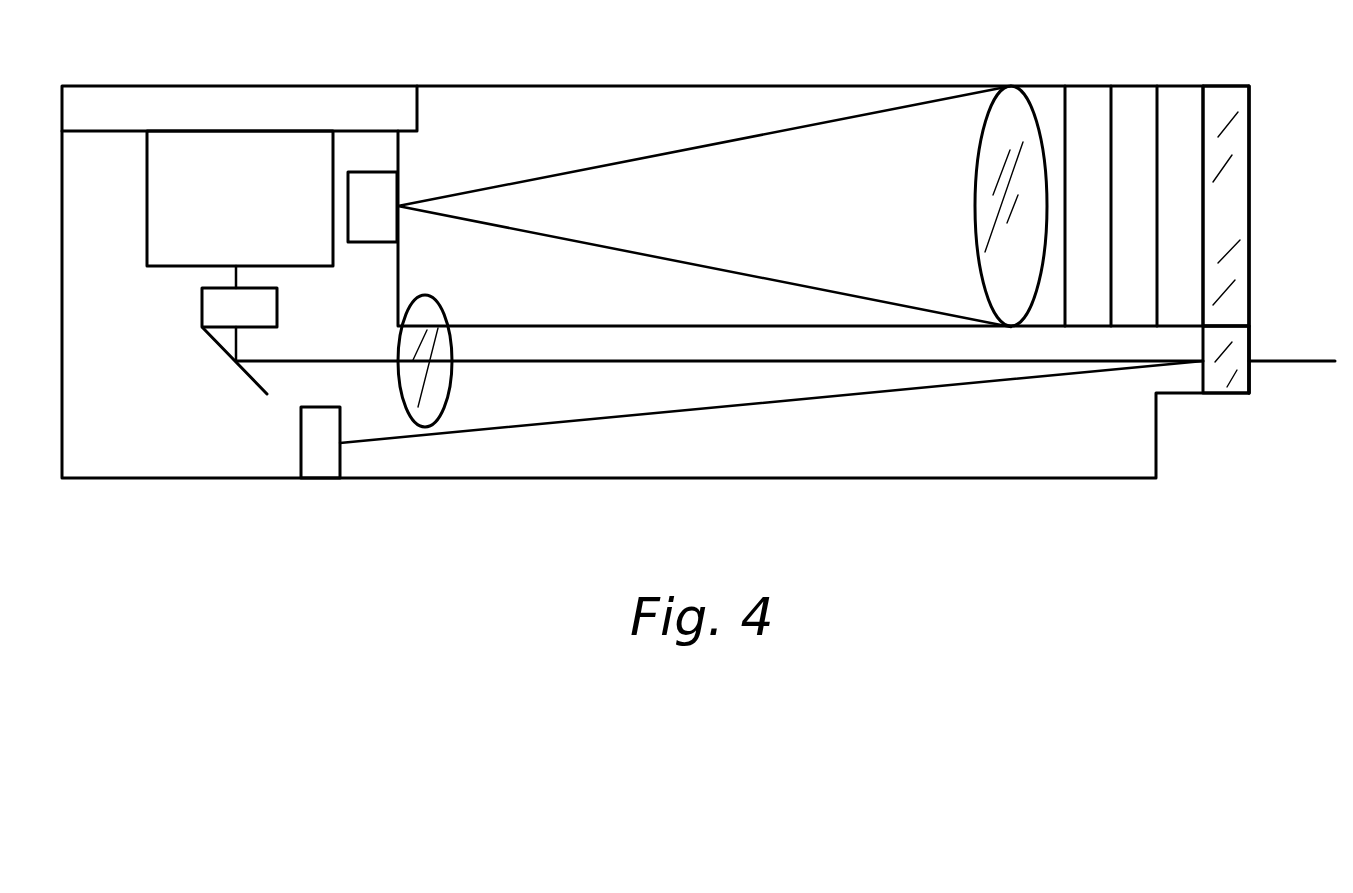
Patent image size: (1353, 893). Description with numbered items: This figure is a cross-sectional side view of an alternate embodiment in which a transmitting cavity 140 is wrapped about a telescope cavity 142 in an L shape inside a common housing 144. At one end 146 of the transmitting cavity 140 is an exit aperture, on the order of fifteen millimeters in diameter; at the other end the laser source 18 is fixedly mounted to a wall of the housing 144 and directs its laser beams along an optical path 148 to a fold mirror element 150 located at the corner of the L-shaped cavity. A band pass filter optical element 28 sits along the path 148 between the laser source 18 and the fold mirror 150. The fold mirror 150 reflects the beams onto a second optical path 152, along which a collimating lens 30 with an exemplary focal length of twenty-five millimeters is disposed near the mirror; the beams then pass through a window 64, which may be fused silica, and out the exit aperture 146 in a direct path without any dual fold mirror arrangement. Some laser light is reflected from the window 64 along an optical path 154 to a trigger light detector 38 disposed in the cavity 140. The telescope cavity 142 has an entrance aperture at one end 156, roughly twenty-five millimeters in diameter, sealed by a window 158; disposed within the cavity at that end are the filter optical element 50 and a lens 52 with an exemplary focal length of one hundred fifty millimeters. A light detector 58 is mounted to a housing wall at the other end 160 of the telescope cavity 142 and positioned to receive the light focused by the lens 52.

The laser source 18 is at (147, 212).
The band pass filter optical element 28 is at (202, 306).
The collimating lens 30 is at (450, 374).
The trigger light detector 38 is at (301, 432).
The filter optical element 50 is at (1093, 85).
The lens 52 is at (977, 197).
The light detector 58 is at (390, 192).
The window 64 is at (1228, 393).
The transmitting cavity 140 is at (826, 464).
The telescope cavity 142 is at (617, 103).
The common housing 144 is at (972, 572).
The exit aperture end 146 is at (1249, 375).
The optical path 148 is at (236, 345).
The fold mirror element 150 is at (222, 352).
The optical path 152 is at (677, 363).
The optical path 154 is at (697, 410).
The entrance aperture end 156 is at (1249, 202).
The window 158 is at (1230, 85).
The other end of telescope cavity 160 is at (398, 152).